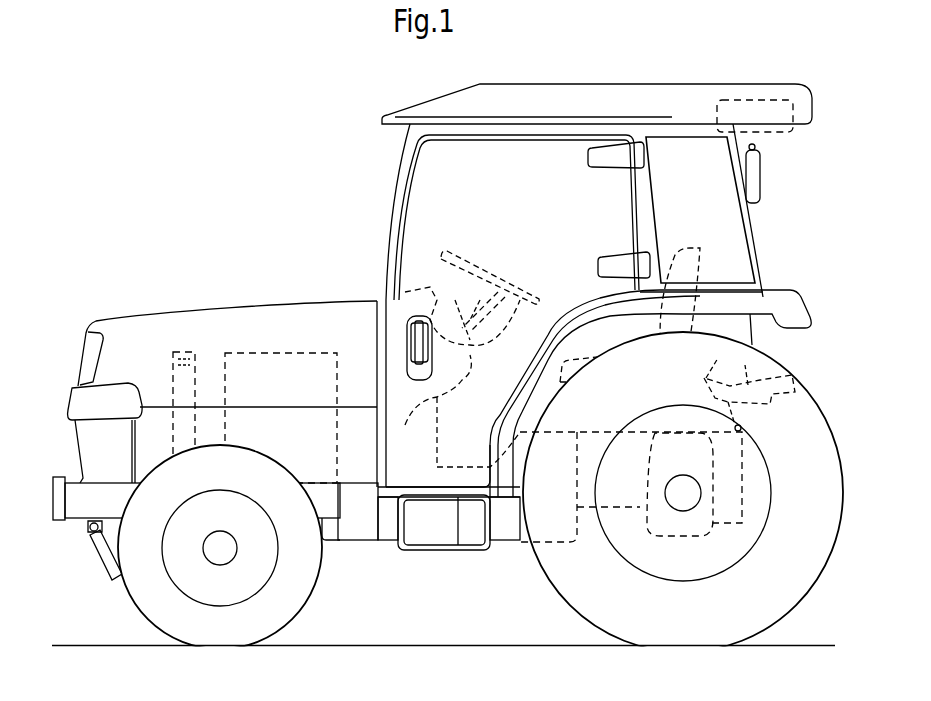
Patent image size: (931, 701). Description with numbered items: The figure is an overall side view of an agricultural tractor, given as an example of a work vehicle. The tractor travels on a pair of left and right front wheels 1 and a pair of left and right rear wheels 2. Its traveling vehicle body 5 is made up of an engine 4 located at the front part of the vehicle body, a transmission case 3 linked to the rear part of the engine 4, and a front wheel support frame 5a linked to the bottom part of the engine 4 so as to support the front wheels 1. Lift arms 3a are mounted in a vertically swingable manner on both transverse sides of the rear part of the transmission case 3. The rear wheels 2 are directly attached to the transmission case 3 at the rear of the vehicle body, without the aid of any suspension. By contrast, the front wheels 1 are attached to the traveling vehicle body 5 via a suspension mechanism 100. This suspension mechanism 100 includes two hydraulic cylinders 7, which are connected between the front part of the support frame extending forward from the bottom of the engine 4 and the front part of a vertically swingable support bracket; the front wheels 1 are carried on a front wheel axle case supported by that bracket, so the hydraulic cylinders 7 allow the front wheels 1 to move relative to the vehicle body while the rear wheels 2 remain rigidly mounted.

The front wheels 1 is at (148, 592).
The rear wheels 2 is at (570, 585).
The transmission case 3 is at (625, 510).
The lift arms 3a is at (745, 392).
The engine 4 is at (265, 353).
The traveling vehicle body 5 is at (205, 406).
The front wheel support frame 5a is at (91, 497).
The hydraulic cylinders 7 is at (81, 559).
The suspension mechanism 100 is at (102, 540).